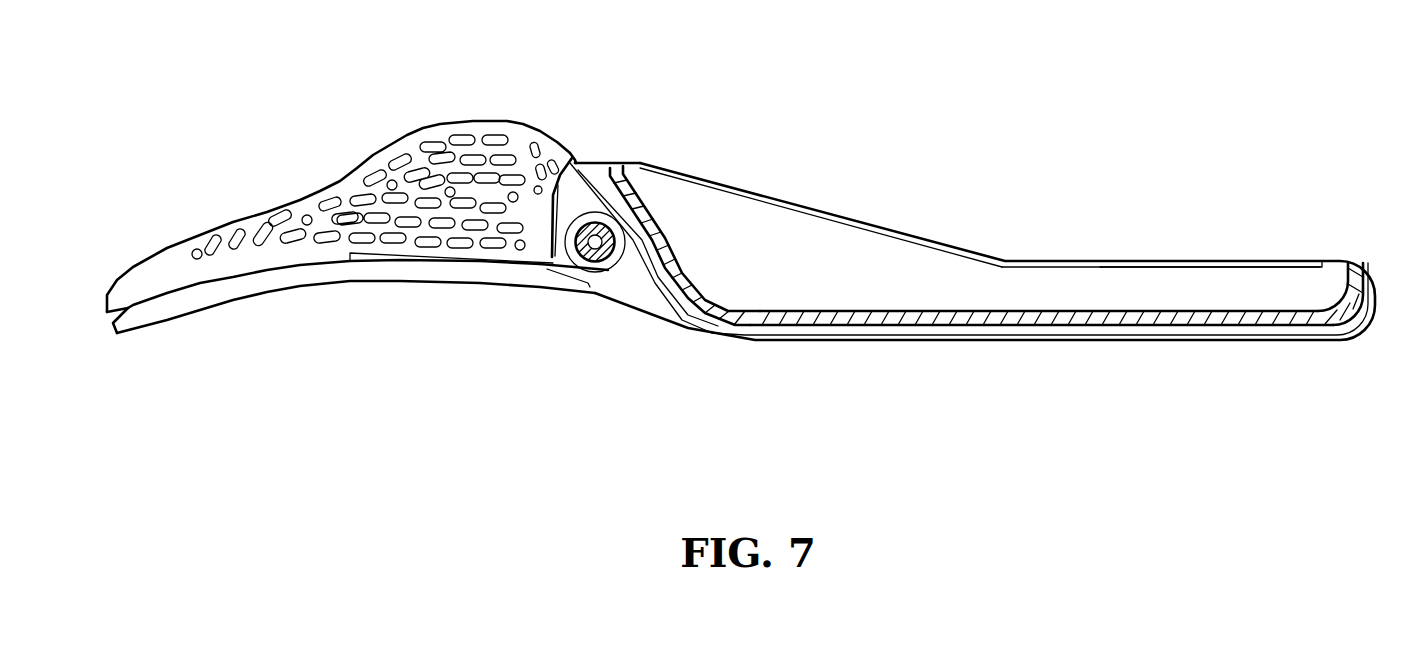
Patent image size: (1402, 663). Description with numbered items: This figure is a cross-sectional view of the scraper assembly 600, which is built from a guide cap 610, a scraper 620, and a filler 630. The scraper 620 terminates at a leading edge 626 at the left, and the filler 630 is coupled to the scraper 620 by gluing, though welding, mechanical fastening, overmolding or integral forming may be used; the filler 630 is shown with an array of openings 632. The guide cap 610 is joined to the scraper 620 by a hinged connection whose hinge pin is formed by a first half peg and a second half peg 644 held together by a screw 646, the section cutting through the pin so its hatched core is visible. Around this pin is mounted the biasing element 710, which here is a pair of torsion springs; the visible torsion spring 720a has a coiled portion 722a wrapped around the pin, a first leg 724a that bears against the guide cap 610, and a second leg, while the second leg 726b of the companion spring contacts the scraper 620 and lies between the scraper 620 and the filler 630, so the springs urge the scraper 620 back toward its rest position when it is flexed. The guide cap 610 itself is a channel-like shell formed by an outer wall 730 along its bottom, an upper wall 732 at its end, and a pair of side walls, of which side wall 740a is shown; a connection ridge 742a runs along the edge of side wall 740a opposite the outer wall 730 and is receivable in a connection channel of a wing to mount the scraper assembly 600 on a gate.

The scraper assembly 600 is at (1095, 142).
The guide cap 610 is at (950, 245).
The scraper 620 is at (277, 284).
The leading edge 626 is at (117, 335).
The filler 630 is at (344, 186).
The apertures 632 is at (495, 135).
The second half peg 644 is at (615, 245).
The screw 646 is at (655, 192).
The biasing element 710 is at (618, 165).
The torsion spring 720a is at (608, 272).
The coiled portion 722a is at (585, 162).
The first leg 724a is at (630, 170).
The second leg 726b is at (487, 263).
The outer wall 730 is at (1018, 342).
The upper wall 732 is at (1362, 290).
The side wall 740a is at (1212, 287).
The connection ridge 742a is at (1108, 258).